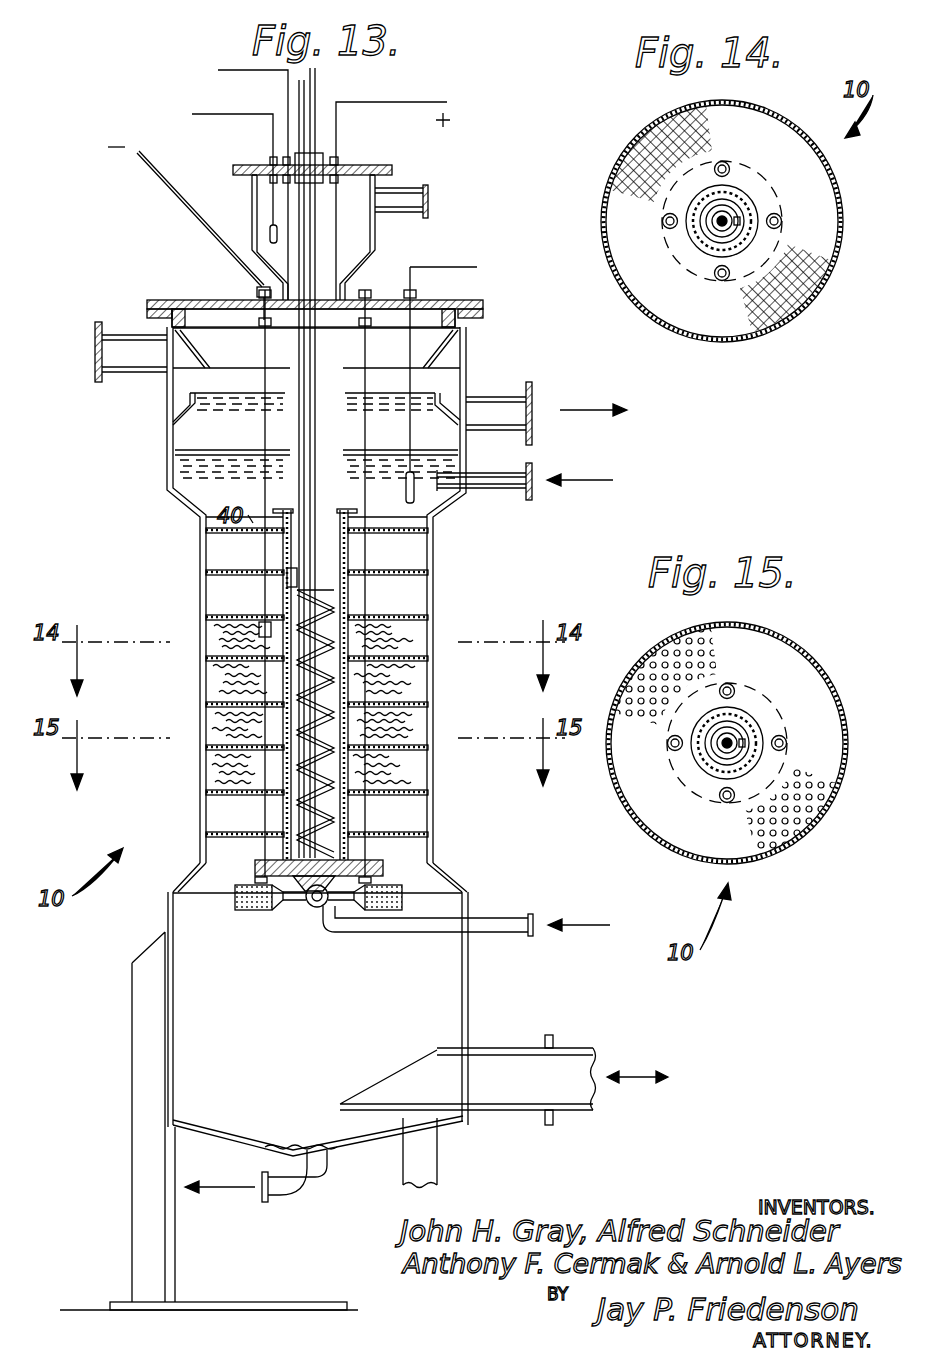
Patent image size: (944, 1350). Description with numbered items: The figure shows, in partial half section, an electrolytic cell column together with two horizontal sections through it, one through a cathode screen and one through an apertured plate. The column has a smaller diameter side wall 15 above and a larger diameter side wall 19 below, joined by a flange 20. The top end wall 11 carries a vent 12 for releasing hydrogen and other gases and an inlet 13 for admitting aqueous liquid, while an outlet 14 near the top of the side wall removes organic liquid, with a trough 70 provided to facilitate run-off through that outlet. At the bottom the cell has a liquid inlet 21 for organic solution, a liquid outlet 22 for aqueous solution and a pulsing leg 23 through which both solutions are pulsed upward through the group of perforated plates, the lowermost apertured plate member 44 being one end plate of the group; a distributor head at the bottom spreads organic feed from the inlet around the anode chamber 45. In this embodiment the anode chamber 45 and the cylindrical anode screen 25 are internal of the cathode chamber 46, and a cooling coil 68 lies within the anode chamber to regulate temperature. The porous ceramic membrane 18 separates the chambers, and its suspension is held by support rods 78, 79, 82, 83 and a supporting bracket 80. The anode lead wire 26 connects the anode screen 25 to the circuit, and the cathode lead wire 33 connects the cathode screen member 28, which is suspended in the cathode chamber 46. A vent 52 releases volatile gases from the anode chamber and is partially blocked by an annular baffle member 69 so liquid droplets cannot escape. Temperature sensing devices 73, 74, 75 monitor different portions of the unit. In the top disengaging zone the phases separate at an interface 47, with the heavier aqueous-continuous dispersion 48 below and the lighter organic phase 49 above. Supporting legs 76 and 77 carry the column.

In FIG. 13, the top end wall 11 is at (358, 167).
In FIG. 13, the vent 12 is at (407, 190).
In FIG. 13, the inlet 13 is at (521, 480).
In FIG. 13, the outlet 14 is at (527, 410).
In FIG. 13, the smaller diameter side wall 15 is at (247, 197).
In FIG. 13, the porous ceramic membrane 18 is at (350, 552).
In FIG. 14, the porous ceramic membrane 18 is at (750, 193).
In FIG. 13, the larger diameter side wall 19 is at (170, 403).
In FIG. 14, the larger diameter side wall 19 is at (628, 148).
In FIG. 15, the larger diameter side wall 19 is at (665, 632).
In FIG. 13, the flange 20 is at (237, 297).
In FIG. 13, the liquid inlet 21 is at (503, 927).
In FIG. 13, the liquid outlet 22 is at (290, 1190).
In FIG. 13, the pulsing leg 23 is at (510, 1060).
In FIG. 13, the anode screen 25 is at (348, 677).
In FIG. 14, the anode screen 25 is at (760, 207).
In FIG. 15, the anode screen 25 is at (745, 752).
In FIG. 13, the anode lead wire 26 is at (410, 78).
In FIG. 13, the cathode screen member 28 is at (205, 690).
In FIG. 14, the cathode screen member 28 is at (758, 320).
In FIG. 13, the cathode lead wire 33 is at (155, 167).
In FIG. 13, the apertured plate member 44 is at (390, 837).
In FIG. 13, the anode chamber 45 is at (340, 597).
In FIG. 14, the anode chamber 45 is at (688, 238).
In FIG. 15, the anode chamber 45 is at (745, 725).
In FIG. 13, the cathode chamber 46 is at (415, 602).
In FIG. 13, the interface 47 is at (183, 450).
In FIG. 13, the aqueous-continuous dispersion 48 is at (202, 475).
In FIG. 13, the organic phase 49 is at (197, 435).
In FIG. 13, the vent 52 is at (118, 325).
In FIG. 13, the cooling coil 68 is at (330, 800).
In FIG. 14, the cooling coil 68 is at (753, 238).
In FIG. 15, the cooling coil 68 is at (798, 835).
In FIG. 13, the annular baffle member 69 is at (458, 337).
In FIG. 13, the trough 70 is at (443, 400).
In FIG. 13, the temperature sensing device 73 is at (267, 232).
In FIG. 13, the temperature sensing device 74 is at (285, 587).
In FIG. 13, the temperature sensing device 75 is at (415, 503).
In FIG. 13, the supporting leg 76 is at (147, 1145).
In FIG. 13, the supporting leg 77 is at (243, 913).
In FIG. 13, the support rod 78 is at (265, 813).
In FIG. 14, the support rod 78 is at (662, 220).
In FIG. 15, the support rod 78 is at (668, 744).
In FIG. 13, the support rod 79 is at (367, 717).
In FIG. 14, the support rod 79 is at (782, 220).
In FIG. 15, the support rod 79 is at (787, 742).
In FIG. 13, the supporting bracket 80 is at (303, 880).
In FIG. 14, the support rod 82 is at (722, 160).
In FIG. 15, the support rod 82 is at (733, 688).
In FIG. 14, the support rod 83 is at (722, 281).
In FIG. 15, the support rod 83 is at (727, 803).